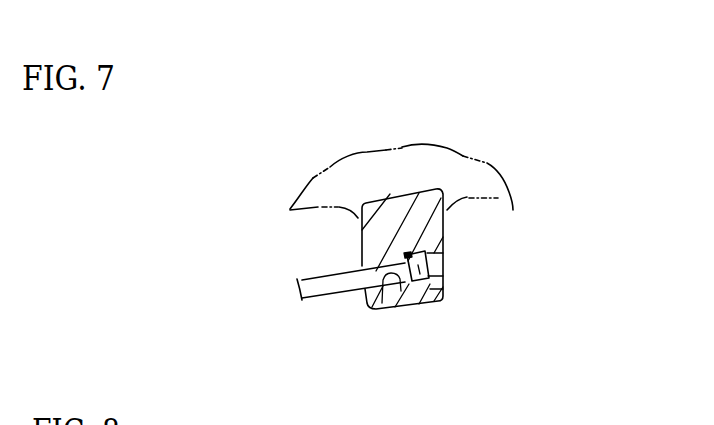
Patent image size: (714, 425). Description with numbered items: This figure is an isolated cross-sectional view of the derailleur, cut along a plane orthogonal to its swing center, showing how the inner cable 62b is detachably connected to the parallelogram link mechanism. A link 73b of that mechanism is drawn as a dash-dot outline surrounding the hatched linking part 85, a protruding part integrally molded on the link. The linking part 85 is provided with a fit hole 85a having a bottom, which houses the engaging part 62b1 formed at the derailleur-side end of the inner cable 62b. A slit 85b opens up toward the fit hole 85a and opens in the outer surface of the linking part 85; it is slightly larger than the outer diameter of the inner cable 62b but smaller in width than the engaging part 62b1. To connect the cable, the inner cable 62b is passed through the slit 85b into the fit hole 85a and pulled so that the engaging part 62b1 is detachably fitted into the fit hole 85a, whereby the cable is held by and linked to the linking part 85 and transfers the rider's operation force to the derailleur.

The link 73b is at (470, 177).
The linking part 85 is at (362, 248).
The fit hole 85a is at (429, 262).
The slit 85b is at (437, 271).
The inner cable 62b is at (330, 298).
The engaging part 62b1 is at (440, 302).